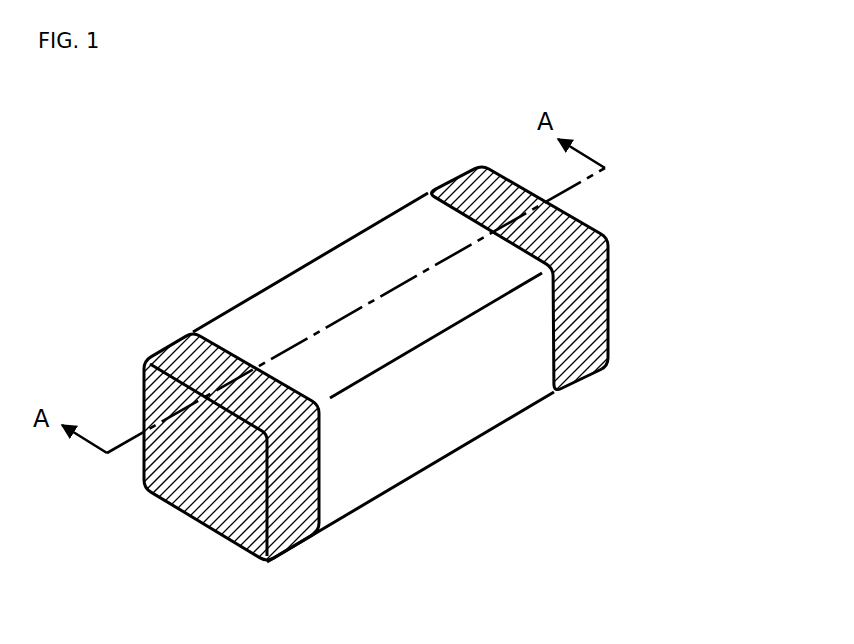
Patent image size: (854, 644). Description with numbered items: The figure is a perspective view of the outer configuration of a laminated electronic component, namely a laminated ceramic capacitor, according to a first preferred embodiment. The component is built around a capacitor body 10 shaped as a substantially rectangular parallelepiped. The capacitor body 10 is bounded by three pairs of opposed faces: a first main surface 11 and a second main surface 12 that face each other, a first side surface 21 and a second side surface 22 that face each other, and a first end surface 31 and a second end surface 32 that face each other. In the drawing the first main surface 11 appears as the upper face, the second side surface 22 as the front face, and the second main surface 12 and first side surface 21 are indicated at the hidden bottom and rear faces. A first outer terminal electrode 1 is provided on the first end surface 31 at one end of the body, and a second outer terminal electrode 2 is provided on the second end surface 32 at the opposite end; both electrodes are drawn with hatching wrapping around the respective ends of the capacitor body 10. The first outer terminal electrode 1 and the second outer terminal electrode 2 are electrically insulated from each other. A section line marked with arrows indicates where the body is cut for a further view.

The capacitor body 10 is at (400, 212).
The first outer terminal electrode 1 is at (227, 538).
The first main surface 11 is at (325, 267).
The second main surface 12 is at (385, 488).
The first side surface 21 is at (258, 312).
The second side surface 22 is at (448, 425).
The first end surface 31 is at (183, 503).
The second end surface 32 is at (609, 282).
The second outer terminal electrode 2 is at (608, 335).